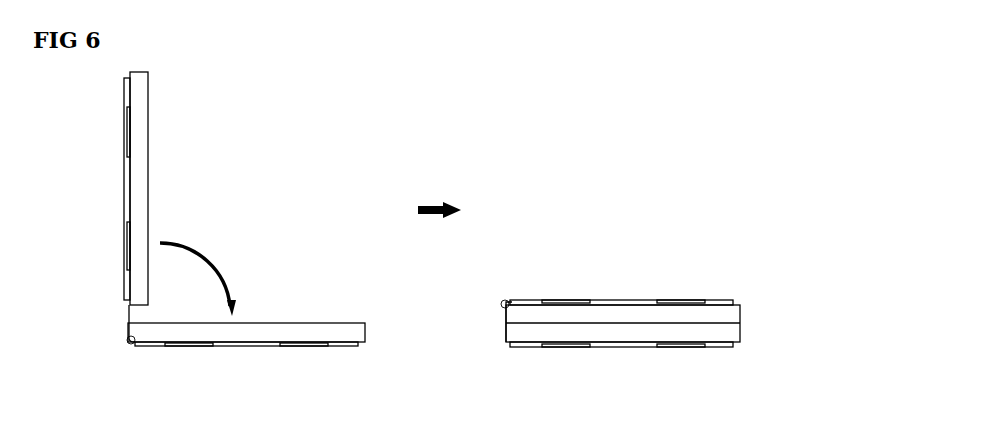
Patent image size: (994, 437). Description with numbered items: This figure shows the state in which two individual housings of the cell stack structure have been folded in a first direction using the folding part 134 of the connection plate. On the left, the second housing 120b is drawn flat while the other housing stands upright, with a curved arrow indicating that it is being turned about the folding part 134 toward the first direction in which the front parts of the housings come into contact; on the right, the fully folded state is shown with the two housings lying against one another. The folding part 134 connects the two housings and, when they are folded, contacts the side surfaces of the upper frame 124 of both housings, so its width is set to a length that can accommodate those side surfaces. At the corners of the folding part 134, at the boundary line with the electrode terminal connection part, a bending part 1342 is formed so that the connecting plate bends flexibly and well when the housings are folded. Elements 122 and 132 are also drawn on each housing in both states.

The second housing 120b is at (296, 323).
The support plate 122 is at (124, 92).
The upper frame 124 is at (143, 92).
The magnet 132 is at (128, 130).
The folding part 134 is at (129, 320).
The bending part 1342 is at (131, 345).